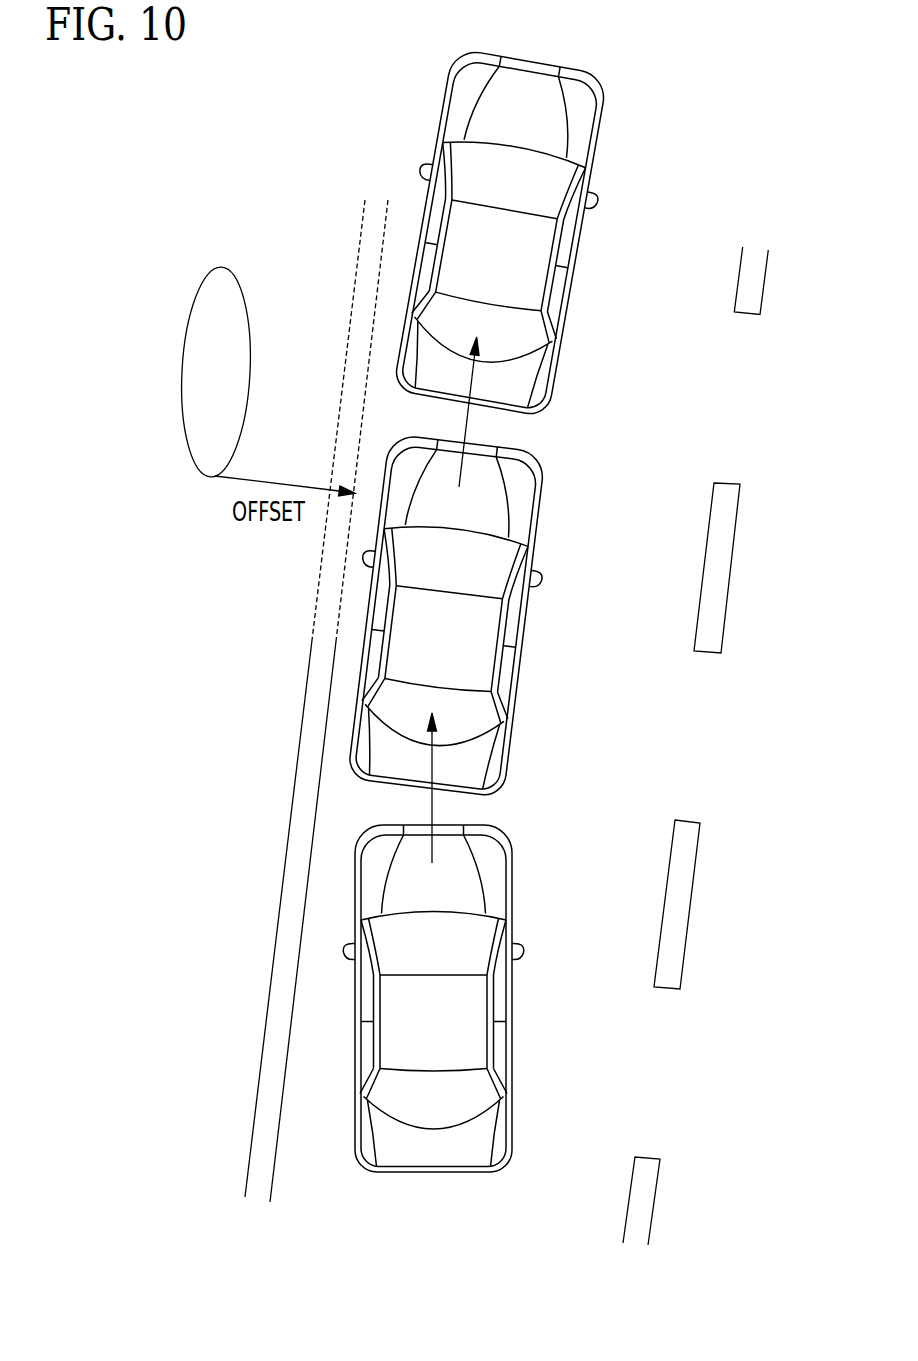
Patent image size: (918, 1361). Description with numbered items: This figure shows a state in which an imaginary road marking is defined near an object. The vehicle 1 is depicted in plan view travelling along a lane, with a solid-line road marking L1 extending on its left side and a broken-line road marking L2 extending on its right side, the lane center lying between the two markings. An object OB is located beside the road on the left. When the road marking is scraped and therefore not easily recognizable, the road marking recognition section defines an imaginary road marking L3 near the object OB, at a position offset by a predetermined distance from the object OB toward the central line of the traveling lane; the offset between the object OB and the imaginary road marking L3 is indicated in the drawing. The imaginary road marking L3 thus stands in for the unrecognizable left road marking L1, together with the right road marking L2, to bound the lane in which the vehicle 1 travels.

The vehicle 1 is at (512, 1123).
The object OB is at (238, 290).
The road marking L1 is at (273, 957).
The road marking L2 is at (732, 566).
The imaginary road marking L3 is at (318, 580).